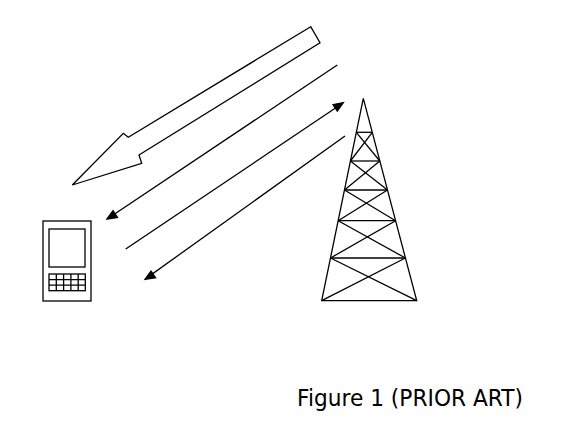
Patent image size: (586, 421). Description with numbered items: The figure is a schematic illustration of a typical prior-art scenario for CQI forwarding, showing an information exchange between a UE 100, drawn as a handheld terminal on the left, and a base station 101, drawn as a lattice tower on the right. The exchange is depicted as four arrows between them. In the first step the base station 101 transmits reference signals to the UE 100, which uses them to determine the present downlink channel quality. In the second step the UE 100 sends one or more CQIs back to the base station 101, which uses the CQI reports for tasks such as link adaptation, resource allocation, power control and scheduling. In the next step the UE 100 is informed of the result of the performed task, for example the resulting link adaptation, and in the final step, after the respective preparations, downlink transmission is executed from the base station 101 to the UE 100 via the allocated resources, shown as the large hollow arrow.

The UE 100 is at (79, 303).
The base station 101 is at (372, 301).